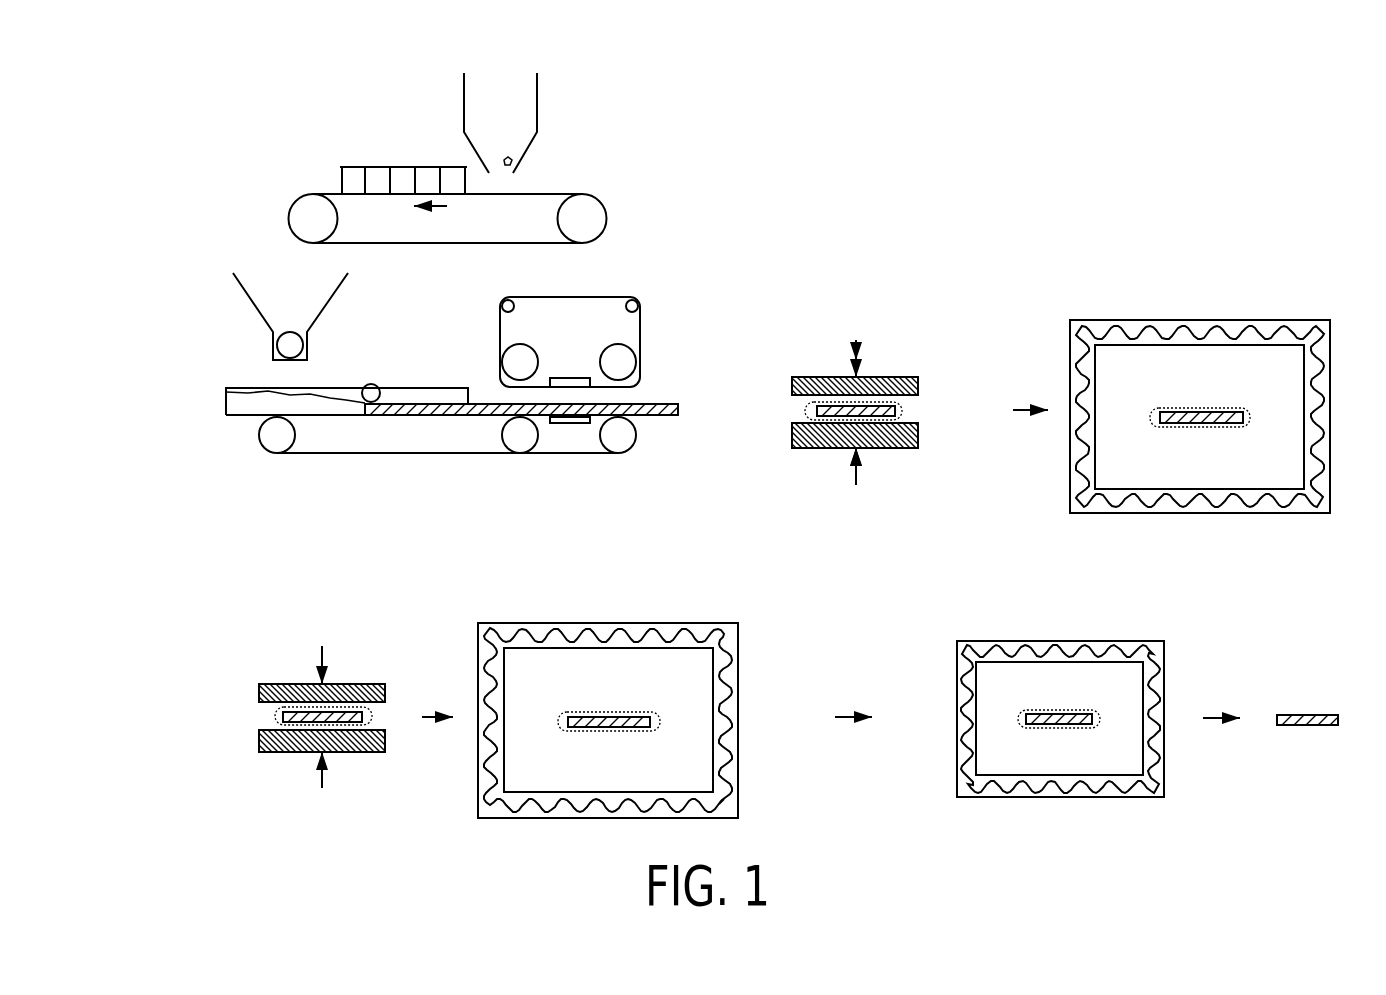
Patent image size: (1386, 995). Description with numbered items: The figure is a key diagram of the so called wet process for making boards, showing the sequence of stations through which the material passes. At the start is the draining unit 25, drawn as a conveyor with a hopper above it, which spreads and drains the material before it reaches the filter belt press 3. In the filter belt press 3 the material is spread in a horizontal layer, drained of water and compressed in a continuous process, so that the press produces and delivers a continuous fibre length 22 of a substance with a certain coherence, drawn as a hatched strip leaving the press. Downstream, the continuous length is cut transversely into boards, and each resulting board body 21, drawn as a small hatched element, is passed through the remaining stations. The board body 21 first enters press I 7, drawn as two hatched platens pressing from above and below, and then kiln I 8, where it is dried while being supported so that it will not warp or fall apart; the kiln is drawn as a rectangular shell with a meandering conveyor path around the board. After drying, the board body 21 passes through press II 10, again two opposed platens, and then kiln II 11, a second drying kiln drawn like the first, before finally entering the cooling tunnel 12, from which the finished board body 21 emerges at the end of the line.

The draining unit 25 is at (398, 110).
The filter belt press 3 is at (232, 358).
The continuous fibre length 22 is at (685, 403).
The press I 7 is at (913, 380).
The board body 21 is at (897, 408).
The kiln I 8 is at (1212, 318).
The press II 10 is at (263, 685).
The kiln II 11 is at (620, 622).
The cooling tunnel 12 is at (1065, 641).